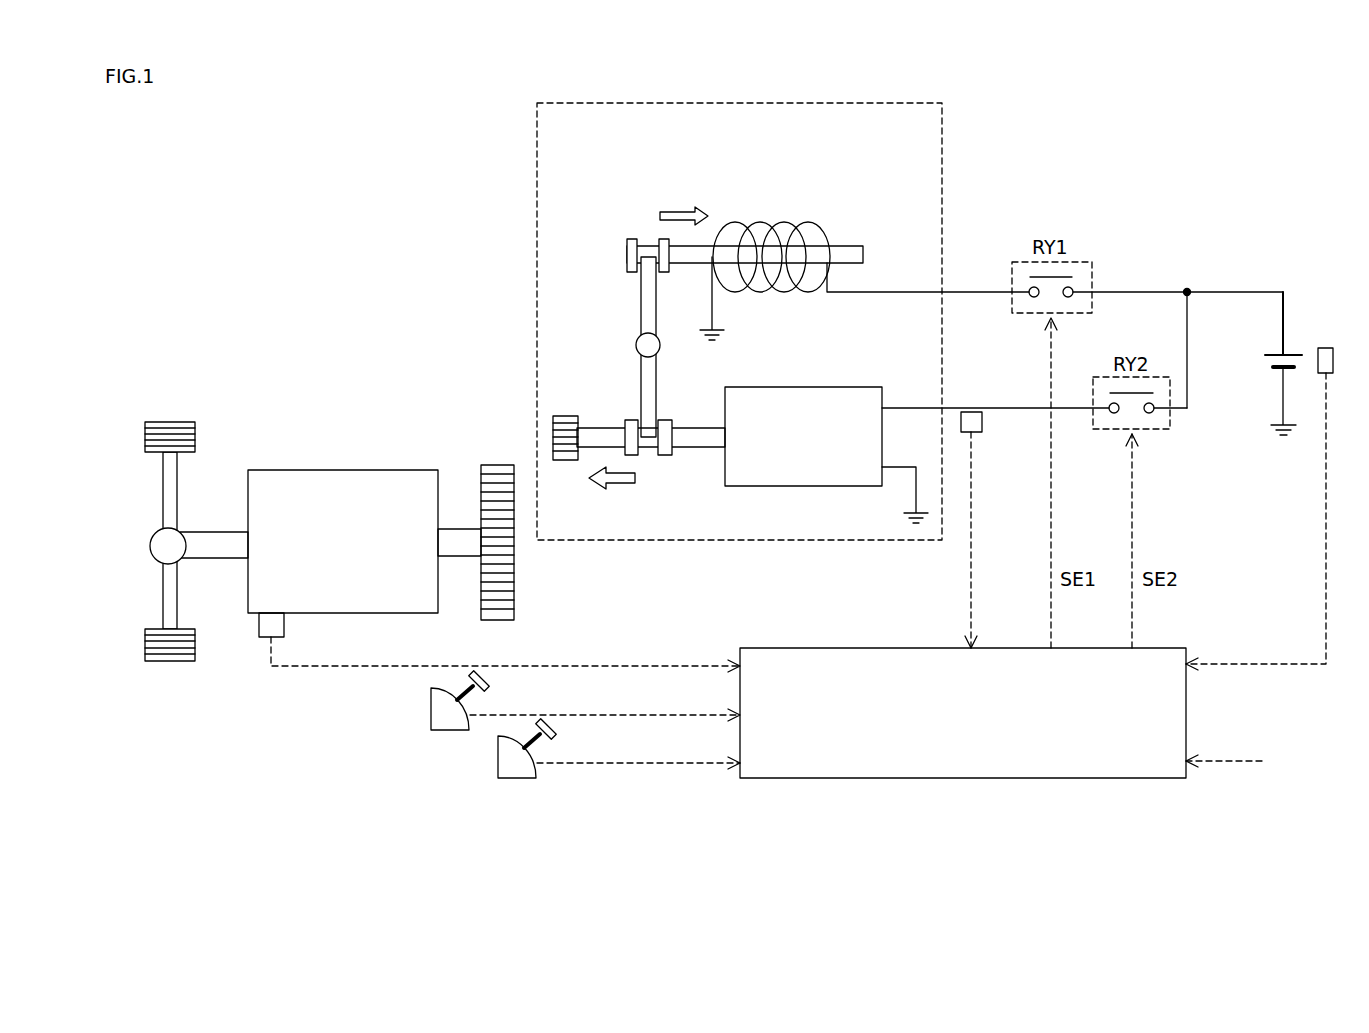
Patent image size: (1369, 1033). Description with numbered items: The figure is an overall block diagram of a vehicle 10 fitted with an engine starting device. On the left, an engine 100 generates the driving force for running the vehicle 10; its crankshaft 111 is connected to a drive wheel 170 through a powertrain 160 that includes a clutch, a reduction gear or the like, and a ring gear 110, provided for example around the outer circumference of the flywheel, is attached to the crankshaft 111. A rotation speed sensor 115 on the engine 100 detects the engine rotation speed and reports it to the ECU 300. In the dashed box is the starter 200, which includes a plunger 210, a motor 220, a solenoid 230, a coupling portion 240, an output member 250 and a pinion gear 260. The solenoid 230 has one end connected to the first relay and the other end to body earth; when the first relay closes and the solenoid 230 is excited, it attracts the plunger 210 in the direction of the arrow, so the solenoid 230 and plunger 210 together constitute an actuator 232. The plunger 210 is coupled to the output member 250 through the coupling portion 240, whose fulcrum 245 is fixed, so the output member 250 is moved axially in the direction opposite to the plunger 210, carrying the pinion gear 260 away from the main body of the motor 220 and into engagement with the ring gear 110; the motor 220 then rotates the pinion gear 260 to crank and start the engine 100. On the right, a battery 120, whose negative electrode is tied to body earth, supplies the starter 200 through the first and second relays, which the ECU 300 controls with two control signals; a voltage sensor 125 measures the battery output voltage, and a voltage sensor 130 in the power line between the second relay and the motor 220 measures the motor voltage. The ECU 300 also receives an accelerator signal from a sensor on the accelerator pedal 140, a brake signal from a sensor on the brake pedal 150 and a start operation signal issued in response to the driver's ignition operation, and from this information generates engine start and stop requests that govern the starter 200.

The vehicle 10 is at (1127, 173).
The engine 100 is at (375, 470).
The ring gear 110 is at (514, 603).
The crankshaft 111 is at (214, 530).
The rotation speed sensor 115 is at (286, 630).
The battery 120 is at (1298, 350).
The voltage sensor 125 is at (1331, 348).
The voltage sensor 130 is at (983, 423).
The accelerator pedal 140 is at (431, 720).
The brake pedal 150 is at (498, 769).
The powertrain 160 is at (152, 540).
The drive wheel 170 is at (182, 422).
The starter 200 is at (880, 103).
The plunger 210 is at (849, 246).
The motor 220 is at (820, 387).
The solenoid 230 is at (779, 222).
The actuator 232 is at (833, 187).
The coupling portion 240 is at (641, 305).
The fulcrum 245 is at (660, 352).
The output member 250 is at (610, 428).
The pinion gear 260 is at (565, 415).
The ECU 300 is at (1122, 778).